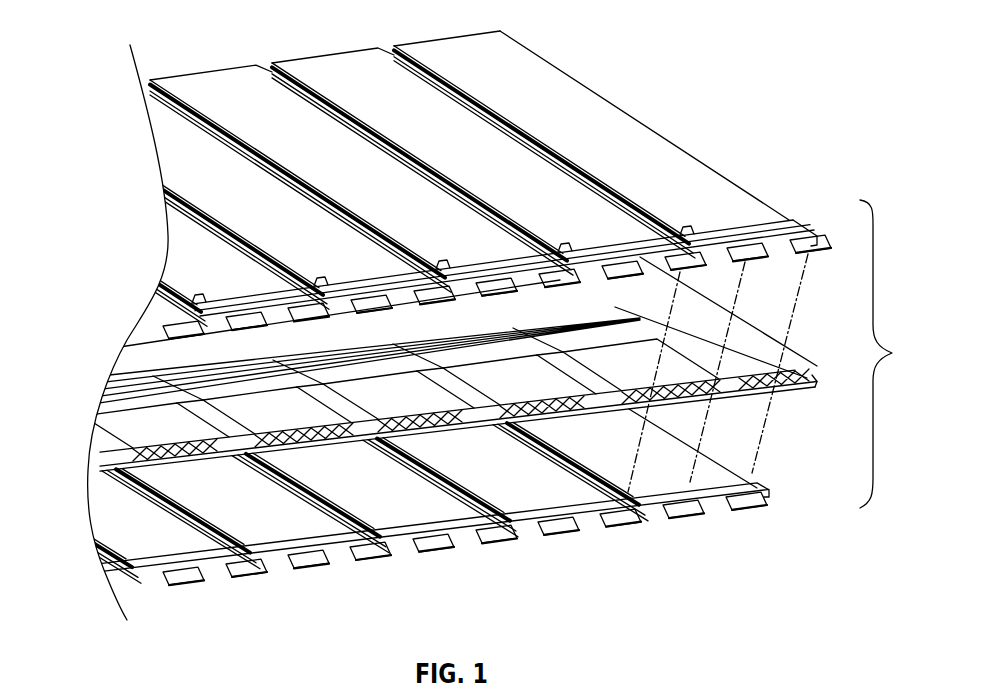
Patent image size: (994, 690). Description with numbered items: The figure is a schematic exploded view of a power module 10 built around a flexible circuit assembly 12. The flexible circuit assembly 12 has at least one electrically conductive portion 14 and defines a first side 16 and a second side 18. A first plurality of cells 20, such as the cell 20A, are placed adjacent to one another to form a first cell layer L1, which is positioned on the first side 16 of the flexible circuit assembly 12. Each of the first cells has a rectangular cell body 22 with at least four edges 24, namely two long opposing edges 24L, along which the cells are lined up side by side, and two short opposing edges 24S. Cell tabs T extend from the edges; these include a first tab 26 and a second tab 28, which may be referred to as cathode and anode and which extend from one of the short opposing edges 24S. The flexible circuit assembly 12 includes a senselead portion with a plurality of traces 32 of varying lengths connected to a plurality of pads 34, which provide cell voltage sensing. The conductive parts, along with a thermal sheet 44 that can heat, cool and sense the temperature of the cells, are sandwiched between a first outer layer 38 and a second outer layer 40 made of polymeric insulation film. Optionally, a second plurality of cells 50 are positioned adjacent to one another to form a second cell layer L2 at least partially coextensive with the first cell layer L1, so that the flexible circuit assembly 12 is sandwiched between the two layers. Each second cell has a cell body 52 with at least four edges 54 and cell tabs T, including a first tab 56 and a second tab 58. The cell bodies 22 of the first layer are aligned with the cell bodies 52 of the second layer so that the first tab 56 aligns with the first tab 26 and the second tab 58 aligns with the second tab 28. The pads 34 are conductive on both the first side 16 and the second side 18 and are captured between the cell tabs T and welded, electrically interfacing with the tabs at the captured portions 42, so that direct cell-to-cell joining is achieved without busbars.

The power module 10 is at (797, 96).
The flexible circuit assembly 12 is at (808, 372).
The electrically conductive portion 14 is at (287, 448).
The first side 16 is at (787, 344).
The second side 18 is at (819, 383).
The first plurality of cells 20 is at (299, 21).
The cell 20A is at (768, 194).
The cell body 22 is at (730, 213).
The edges 24 is at (612, 97).
The short opposing edges 24S is at (461, 23).
The long opposing edges 24L is at (539, 46).
The first tab 26 is at (792, 264).
The second tab 28 is at (725, 260).
The traces 32 is at (138, 373).
The pads 34 is at (343, 425).
The first outer layer 38 is at (744, 391).
The second outer layer 40 is at (242, 453).
The captured portions 42 is at (433, 418).
The thermal sheet 44 is at (680, 296).
The second plurality of cells 50 is at (467, 552).
The cell body 52 is at (619, 453).
The edges 54 is at (277, 562).
The first tab 56 is at (753, 500).
The second tab 58 is at (688, 515).
The cell tabs T is at (311, 327).
The first cell layer L1 is at (183, 35).
The second cell layer L2 is at (612, 533).